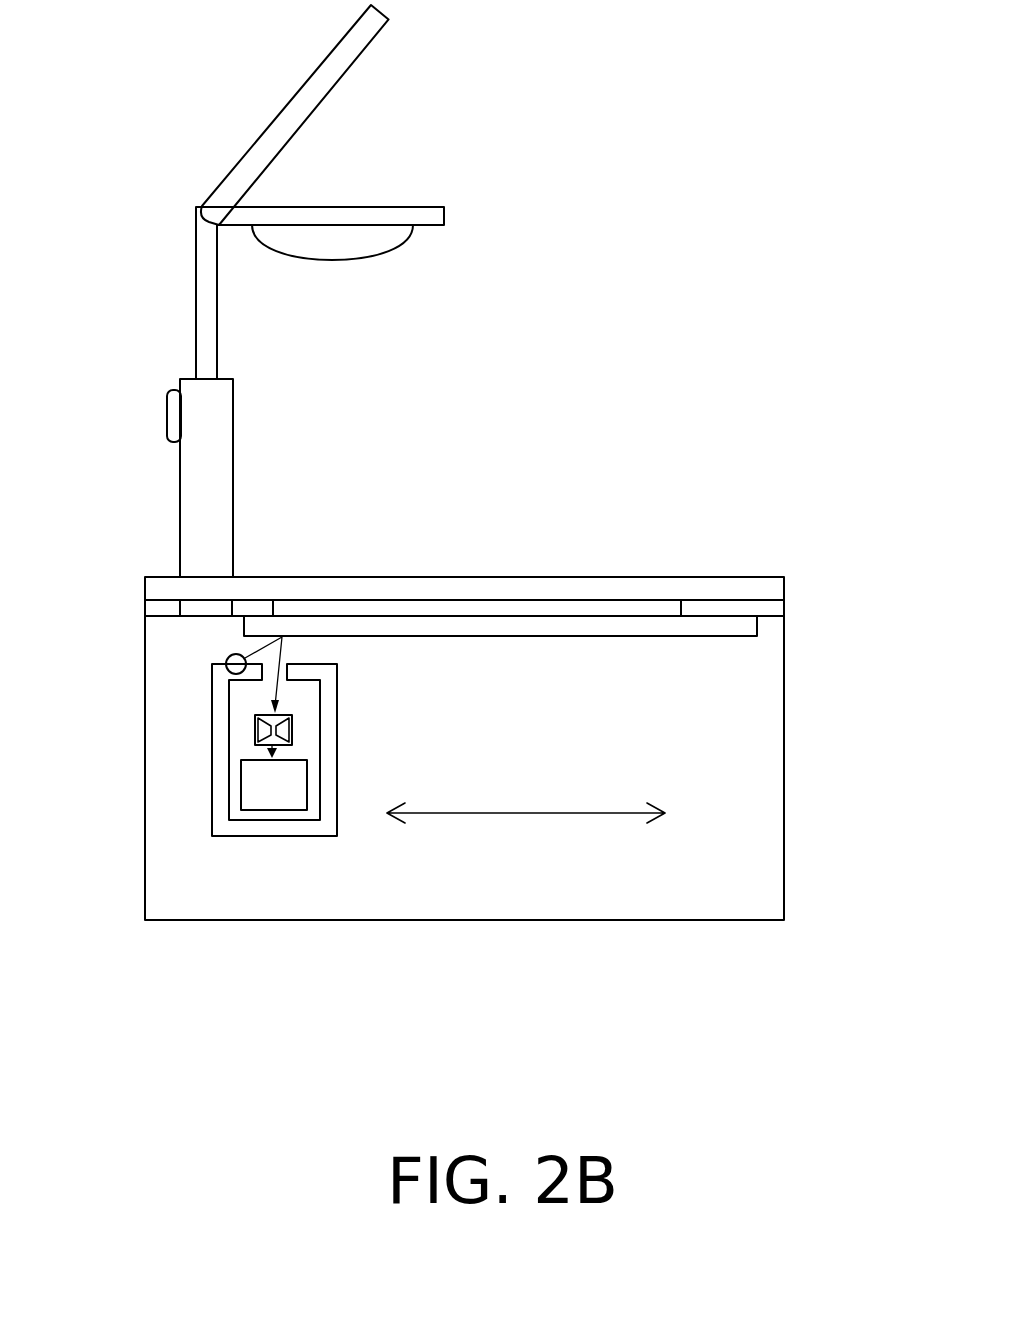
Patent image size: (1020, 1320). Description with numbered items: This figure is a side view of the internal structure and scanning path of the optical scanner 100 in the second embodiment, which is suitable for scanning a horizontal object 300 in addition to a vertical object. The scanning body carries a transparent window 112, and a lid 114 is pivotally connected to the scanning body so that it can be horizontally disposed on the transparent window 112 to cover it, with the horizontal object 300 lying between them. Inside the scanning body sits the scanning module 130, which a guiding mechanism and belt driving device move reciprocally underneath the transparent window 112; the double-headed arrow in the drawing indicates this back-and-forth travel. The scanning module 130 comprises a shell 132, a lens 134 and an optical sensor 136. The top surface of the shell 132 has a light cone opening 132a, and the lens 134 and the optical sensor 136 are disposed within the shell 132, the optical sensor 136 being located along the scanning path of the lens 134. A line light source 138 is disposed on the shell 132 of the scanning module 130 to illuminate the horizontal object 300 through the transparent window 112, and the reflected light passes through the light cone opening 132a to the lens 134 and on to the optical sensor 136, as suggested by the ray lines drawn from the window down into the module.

The optical scanner 100 is at (872, 1008).
The horizontal object 300 is at (422, 600).
The lid 114 is at (668, 587).
The transparent window 112 is at (737, 628).
The scanning module 130 is at (281, 817).
The shell 132 is at (222, 827).
The light cone opening 132a is at (291, 653).
The lens 134 is at (255, 730).
The optical sensor 136 is at (273, 800).
The line light source 138 is at (226, 662).